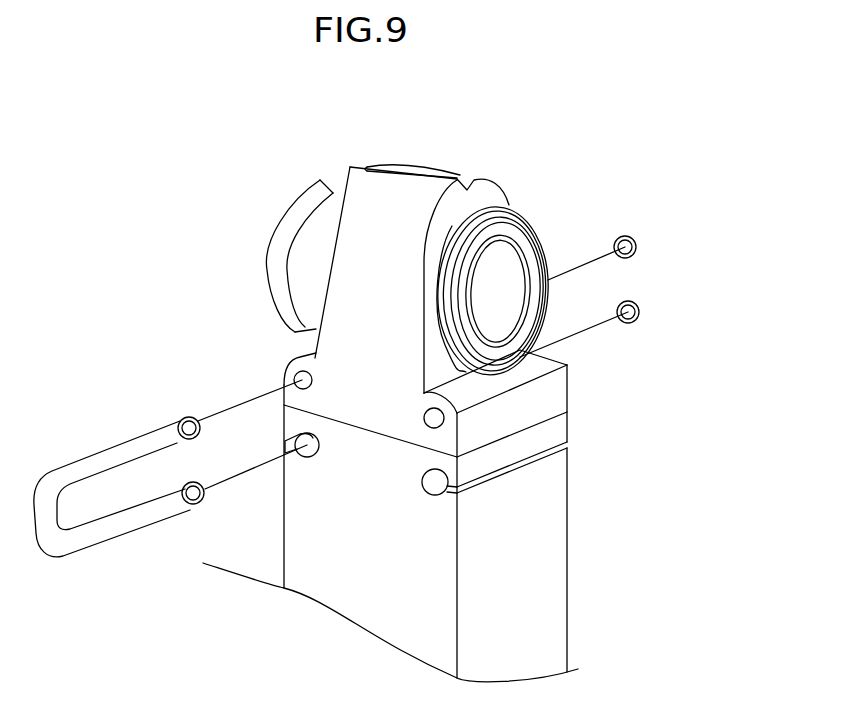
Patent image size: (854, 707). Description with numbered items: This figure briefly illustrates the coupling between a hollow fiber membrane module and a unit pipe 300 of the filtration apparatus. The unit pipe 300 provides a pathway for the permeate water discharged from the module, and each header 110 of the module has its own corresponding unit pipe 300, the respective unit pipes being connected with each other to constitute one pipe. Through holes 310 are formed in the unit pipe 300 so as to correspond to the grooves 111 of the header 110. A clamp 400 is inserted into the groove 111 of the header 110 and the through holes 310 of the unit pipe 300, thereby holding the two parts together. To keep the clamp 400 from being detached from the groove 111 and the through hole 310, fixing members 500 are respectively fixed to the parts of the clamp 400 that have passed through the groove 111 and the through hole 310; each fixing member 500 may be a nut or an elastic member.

The header 110 is at (547, 539).
The groove 111 is at (297, 450).
The unit pipe 300 is at (425, 187).
The through hole 310 is at (302, 380).
The clamp 400 is at (127, 525).
The fixing member 500 is at (640, 315).